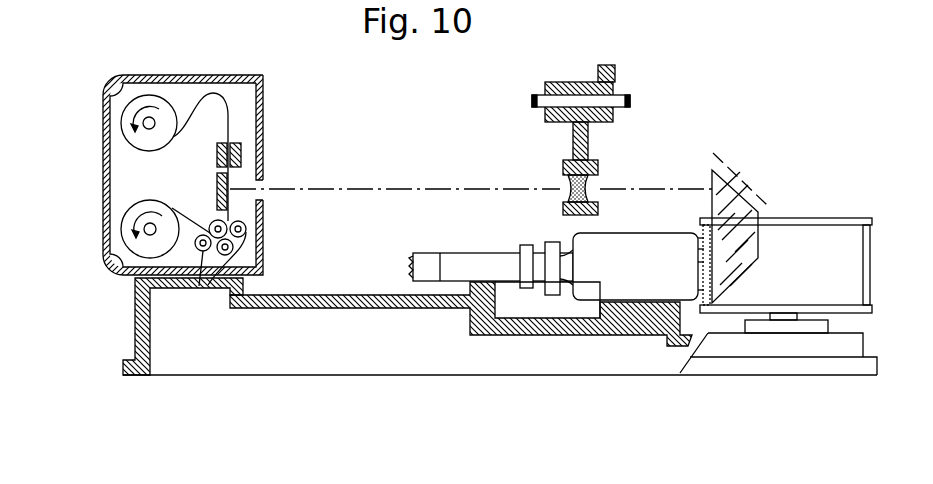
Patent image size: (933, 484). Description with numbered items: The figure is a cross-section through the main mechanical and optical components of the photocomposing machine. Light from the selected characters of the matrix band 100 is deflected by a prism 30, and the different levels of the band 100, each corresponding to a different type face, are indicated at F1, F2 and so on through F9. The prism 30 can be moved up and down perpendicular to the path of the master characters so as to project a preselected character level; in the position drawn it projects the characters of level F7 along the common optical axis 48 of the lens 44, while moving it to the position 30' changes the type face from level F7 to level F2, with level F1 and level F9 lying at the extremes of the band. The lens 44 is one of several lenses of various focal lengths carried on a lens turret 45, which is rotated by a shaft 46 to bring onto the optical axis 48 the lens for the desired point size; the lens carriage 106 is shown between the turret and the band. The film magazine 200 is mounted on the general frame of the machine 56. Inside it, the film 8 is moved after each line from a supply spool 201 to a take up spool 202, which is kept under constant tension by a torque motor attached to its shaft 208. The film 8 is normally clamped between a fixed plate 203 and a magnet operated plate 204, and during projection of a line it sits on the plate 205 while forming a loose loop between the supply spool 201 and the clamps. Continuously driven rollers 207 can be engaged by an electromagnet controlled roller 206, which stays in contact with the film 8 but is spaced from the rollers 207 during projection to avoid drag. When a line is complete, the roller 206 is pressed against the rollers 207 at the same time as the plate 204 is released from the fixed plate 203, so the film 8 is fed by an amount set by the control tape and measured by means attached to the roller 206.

The film magazine 200 is at (190, 92).
The supply spool 201 is at (137, 143).
The take up spool 202 is at (133, 213).
The fixed plate 203 is at (217, 152).
The magnet operated plate 204 is at (241, 158).
The plate 205 is at (217, 188).
The electromagnet controlled roller 206 is at (217, 220).
The continuously driven rollers 207 is at (205, 290).
The shaft 208 is at (147, 232).
The film 8 is at (229, 124).
The optical axis 48 is at (397, 190).
The lens 44 is at (568, 190).
The lens turret 45 is at (594, 168).
The shaft 46 is at (630, 101).
The lens carriage 106 is at (624, 231).
The level F1 is at (700, 239).
The level F2 is at (700, 249).
The level F7 is at (700, 262).
The level F9 is at (700, 290).
The prism 30 is at (752, 236).
The prism position 30' is at (747, 179).
The band 100 is at (888, 279).
The general frame of the machine 56 is at (322, 308).